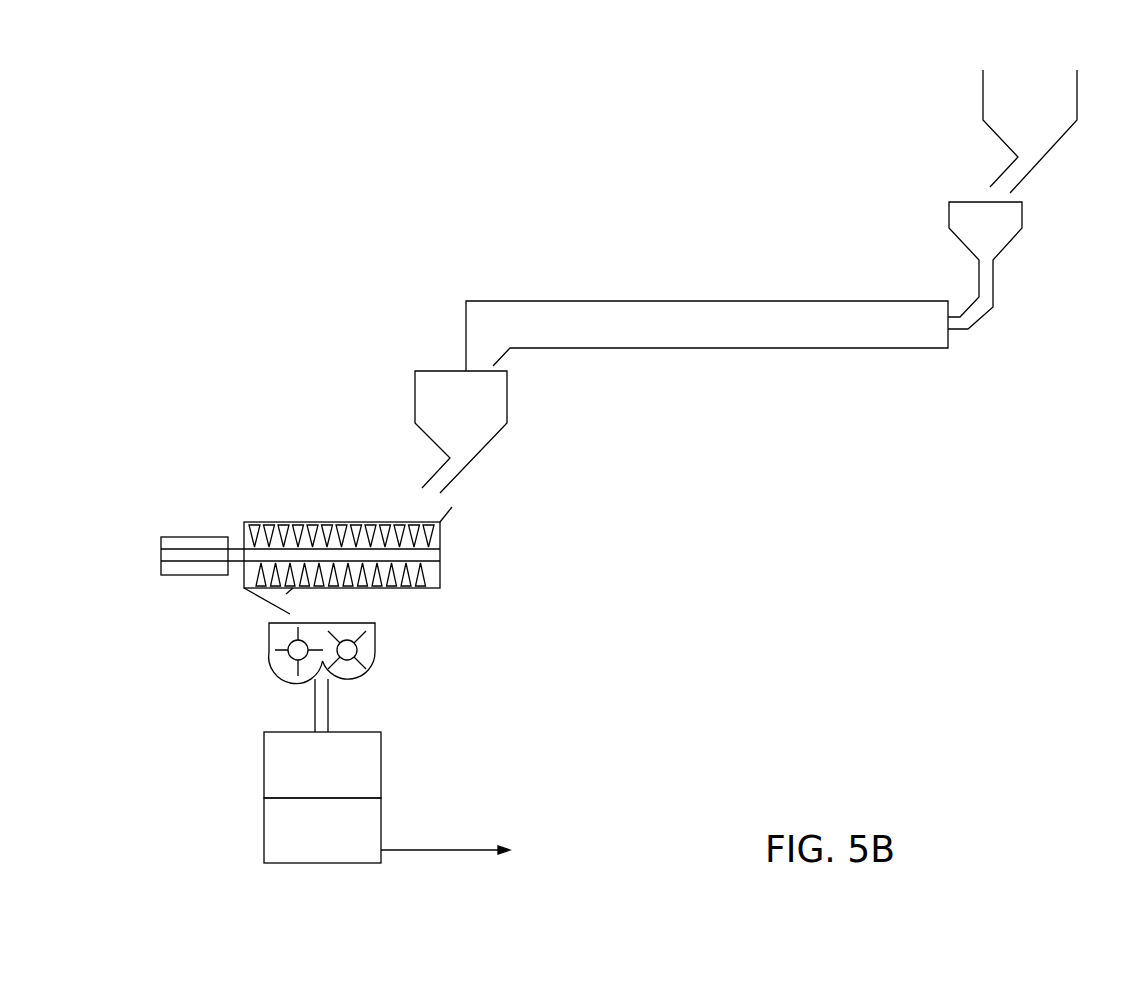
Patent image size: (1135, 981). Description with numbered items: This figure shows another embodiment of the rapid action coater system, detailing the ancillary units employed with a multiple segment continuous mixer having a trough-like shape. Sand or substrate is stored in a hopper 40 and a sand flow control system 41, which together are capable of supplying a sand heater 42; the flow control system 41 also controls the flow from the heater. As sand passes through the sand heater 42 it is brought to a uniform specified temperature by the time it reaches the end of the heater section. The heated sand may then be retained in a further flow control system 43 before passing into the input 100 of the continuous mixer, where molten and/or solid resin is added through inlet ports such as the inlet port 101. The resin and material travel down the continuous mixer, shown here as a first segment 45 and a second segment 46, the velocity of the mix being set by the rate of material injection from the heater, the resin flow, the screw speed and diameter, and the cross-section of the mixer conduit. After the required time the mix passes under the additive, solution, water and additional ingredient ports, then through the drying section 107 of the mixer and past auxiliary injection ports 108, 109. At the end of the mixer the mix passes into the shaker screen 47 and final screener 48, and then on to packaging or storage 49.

The hopper 40 is at (1015, 111).
The sand flow control system 41 is at (970, 232).
The sand heater 42 is at (726, 298).
The flow control system 43 is at (445, 411).
The continuous mixer segment 45 is at (344, 511).
The continuous mixer segment 46 is at (386, 637).
The shaker screen 47 is at (306, 771).
The final screener 48 is at (306, 841).
The packaging or storage 49 is at (514, 863).
The input 100 is at (420, 503).
The inlet port 101 is at (339, 490).
The drying section 107 is at (333, 686).
The auxiliary injection port 108 is at (358, 624).
The auxiliary injection port 109 is at (347, 650).